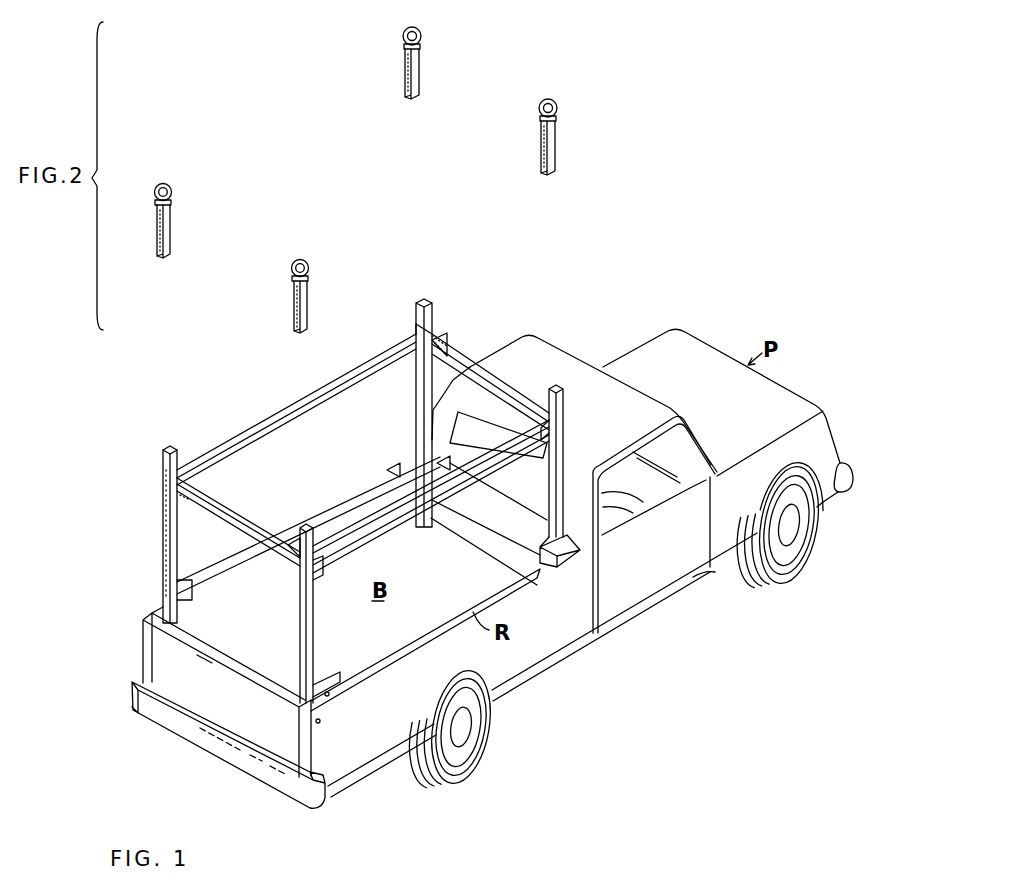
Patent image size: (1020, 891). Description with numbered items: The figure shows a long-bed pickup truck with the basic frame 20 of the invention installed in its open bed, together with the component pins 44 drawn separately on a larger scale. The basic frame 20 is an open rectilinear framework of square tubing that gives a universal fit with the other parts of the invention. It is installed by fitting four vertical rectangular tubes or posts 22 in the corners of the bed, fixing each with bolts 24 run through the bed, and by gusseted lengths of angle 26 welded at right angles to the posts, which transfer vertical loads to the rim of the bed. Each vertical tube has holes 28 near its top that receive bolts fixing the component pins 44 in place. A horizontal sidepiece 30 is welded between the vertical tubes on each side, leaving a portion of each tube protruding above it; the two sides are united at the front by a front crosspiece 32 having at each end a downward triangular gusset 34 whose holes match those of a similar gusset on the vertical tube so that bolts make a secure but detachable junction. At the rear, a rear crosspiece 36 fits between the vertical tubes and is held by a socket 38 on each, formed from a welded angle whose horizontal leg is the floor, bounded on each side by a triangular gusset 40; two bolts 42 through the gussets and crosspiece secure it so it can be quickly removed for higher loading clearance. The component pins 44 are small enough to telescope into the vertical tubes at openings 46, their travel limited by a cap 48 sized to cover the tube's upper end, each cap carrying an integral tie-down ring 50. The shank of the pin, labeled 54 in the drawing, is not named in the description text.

In FIG. 1, the basic frame 20 is at (341, 513).
In FIG. 1, the vertical rectangular tubes or posts 22 is at (311, 584).
In FIG. 1, the bolts 24 is at (322, 721).
In FIG. 1, the gusseted lengths of angle 26 is at (336, 682).
In FIG. 1, the holes 28 is at (156, 517).
In FIG. 1, the horizontal sidepiece 30 is at (268, 434).
In FIG. 1, the front crosspiece 32 is at (460, 351).
In FIG. 1, the downward triangular gusset 34 is at (433, 352).
In FIG. 1, the rear crosspiece 36 is at (217, 504).
In FIG. 1, the socket 38 is at (287, 570).
In FIG. 1, the triangular gusset 40 is at (300, 586).
In FIG. 1, the bolts 42 is at (290, 546).
In FIG. 2, the component pins 44 is at (168, 226).
In FIG. 1, the openings 46 is at (172, 450).
In FIG. 2, the cap 48 is at (168, 205).
In FIG. 2, the tie-down ring 50 is at (173, 190).
In FIG. 2, the pin shank 54 is at (158, 225).